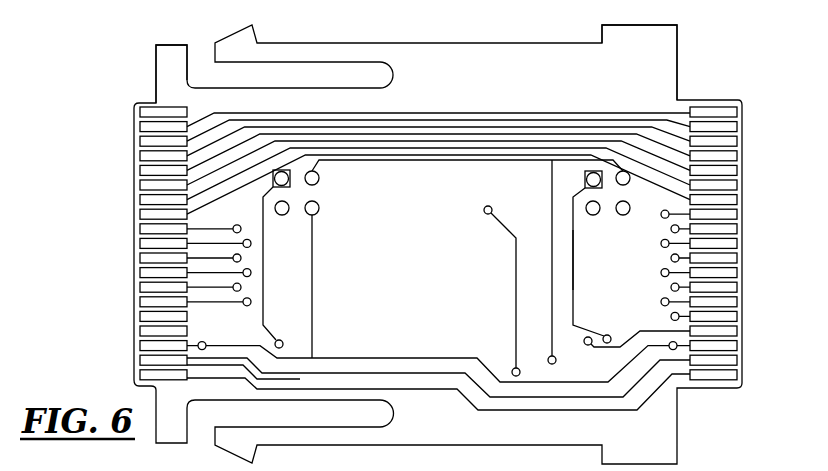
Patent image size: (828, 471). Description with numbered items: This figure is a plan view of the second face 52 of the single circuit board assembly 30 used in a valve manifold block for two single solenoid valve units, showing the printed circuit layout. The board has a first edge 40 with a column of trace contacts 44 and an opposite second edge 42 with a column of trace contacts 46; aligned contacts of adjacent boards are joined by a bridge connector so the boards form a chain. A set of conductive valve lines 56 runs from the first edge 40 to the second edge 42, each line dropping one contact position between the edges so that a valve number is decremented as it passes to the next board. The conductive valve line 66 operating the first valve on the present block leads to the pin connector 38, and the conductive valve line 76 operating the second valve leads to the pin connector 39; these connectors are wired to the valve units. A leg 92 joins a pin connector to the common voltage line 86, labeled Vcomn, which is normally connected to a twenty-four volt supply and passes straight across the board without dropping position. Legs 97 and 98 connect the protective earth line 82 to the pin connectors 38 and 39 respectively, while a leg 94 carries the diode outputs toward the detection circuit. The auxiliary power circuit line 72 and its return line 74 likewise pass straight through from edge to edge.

The single circuit board assembly 30 is at (480, 43).
The face of the board 52 is at (514, 88).
The conductive valve lines 56 is at (556, 132).
The first edge 40 is at (728, 100).
The second edge 42 is at (143, 103).
The trace contacts 46 is at (146, 303).
The trace contacts 44 is at (728, 346).
The pin connector 39 is at (329, 183).
The pin connector 38 is at (640, 193).
The leg 98 is at (432, 163).
The leg 97 is at (552, 203).
The leg 94 is at (516, 292).
The leg 92 is at (315, 258).
The conductive valve line 76 is at (263, 300).
The conductive valve line 66 is at (575, 250).
The protective earth line 82 is at (553, 342).
The common voltage line 86 is at (420, 358).
The auxiliary power circuit line 72 is at (417, 375).
The return line 74 is at (503, 412).